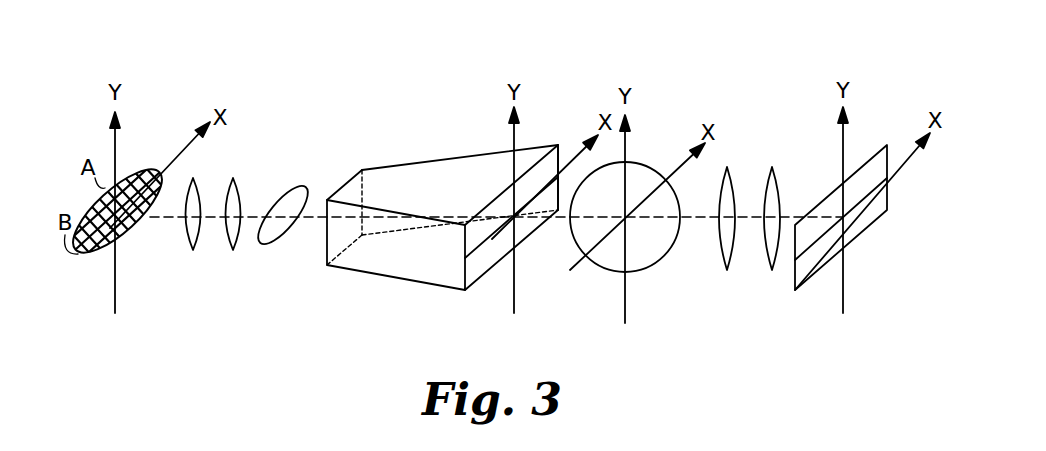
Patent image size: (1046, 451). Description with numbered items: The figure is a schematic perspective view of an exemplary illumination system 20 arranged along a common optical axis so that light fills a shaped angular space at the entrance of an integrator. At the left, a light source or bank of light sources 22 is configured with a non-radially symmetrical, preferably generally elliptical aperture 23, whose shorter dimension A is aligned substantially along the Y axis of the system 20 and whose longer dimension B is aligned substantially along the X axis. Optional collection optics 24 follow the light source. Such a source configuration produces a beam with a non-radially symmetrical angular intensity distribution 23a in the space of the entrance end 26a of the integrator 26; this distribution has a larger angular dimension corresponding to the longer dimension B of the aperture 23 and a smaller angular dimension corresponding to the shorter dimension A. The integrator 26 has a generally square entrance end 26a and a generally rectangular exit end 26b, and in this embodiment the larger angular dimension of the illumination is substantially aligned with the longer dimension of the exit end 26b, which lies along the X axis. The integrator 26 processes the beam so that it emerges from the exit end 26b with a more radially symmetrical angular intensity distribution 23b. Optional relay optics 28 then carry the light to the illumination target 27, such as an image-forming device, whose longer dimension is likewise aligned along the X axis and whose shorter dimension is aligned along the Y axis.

The illumination system 20 is at (470, 68).
The light source or bank of light sources 22 is at (126, 245).
The non-radially symmetrical aperture 23 is at (91, 254).
The non-radially symmetrical angular intensity distribution 23a is at (272, 243).
The more radially symmetrical angular intensity distribution 23b is at (660, 262).
The collection optics 24 is at (193, 250).
The integrator 26 is at (440, 286).
The entrance end 26a is at (335, 193).
The exit end 26b is at (558, 145).
The illumination target 27 is at (835, 190).
The relay optics 28 is at (727, 167).